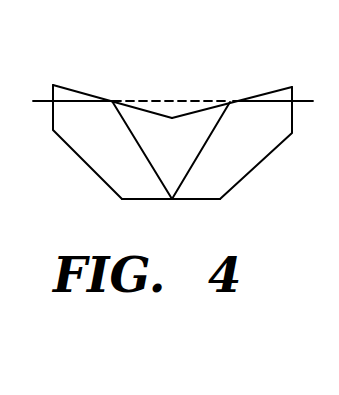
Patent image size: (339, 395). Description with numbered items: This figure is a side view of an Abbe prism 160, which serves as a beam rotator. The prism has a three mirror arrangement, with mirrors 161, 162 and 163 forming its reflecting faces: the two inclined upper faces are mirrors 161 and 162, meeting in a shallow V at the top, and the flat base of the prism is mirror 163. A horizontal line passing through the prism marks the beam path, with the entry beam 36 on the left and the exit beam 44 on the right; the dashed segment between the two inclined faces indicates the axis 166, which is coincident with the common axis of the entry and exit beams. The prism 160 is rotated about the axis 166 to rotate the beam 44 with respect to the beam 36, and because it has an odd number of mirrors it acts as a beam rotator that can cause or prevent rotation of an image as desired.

The beam 36 is at (35, 100).
The beam 44 is at (303, 101).
The Abbe prism 160 is at (63, 156).
The mirror 161 is at (81, 93).
The mirror 162 is at (258, 95).
The mirror 163 is at (145, 200).
The axis 166 is at (202, 101).